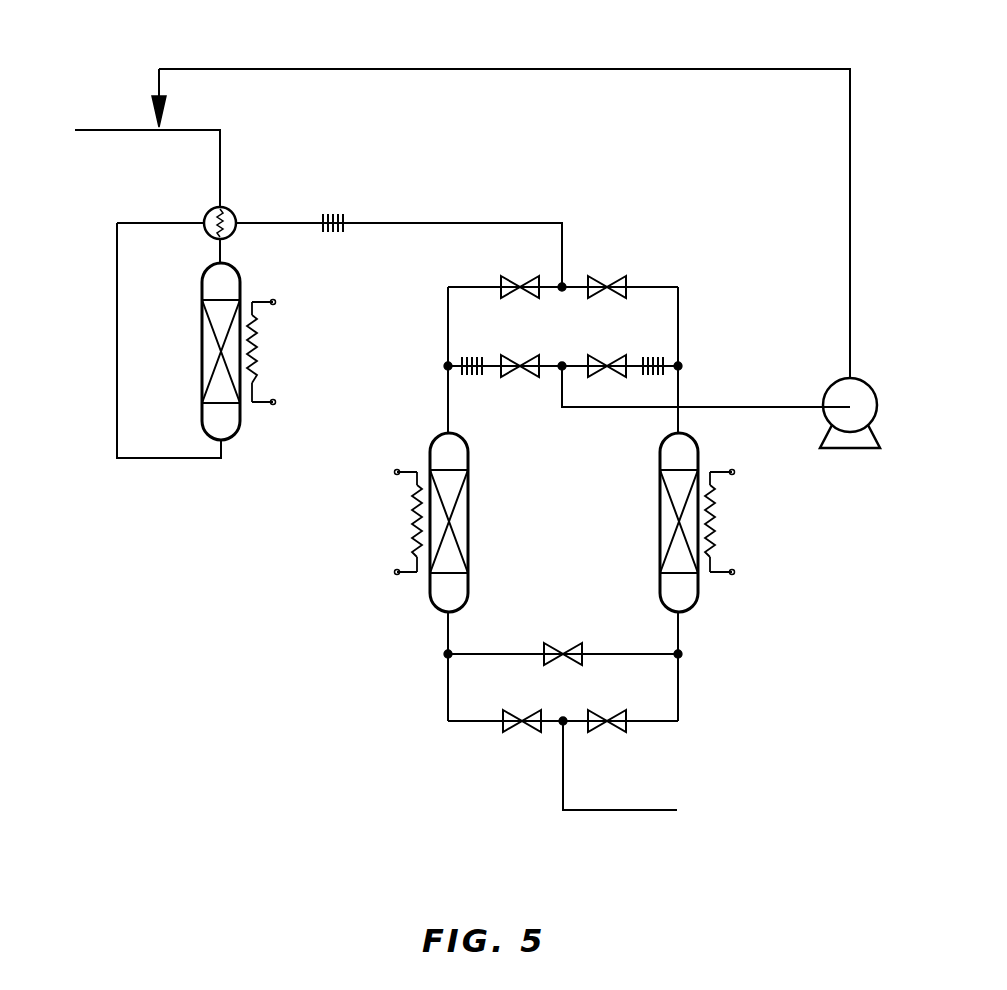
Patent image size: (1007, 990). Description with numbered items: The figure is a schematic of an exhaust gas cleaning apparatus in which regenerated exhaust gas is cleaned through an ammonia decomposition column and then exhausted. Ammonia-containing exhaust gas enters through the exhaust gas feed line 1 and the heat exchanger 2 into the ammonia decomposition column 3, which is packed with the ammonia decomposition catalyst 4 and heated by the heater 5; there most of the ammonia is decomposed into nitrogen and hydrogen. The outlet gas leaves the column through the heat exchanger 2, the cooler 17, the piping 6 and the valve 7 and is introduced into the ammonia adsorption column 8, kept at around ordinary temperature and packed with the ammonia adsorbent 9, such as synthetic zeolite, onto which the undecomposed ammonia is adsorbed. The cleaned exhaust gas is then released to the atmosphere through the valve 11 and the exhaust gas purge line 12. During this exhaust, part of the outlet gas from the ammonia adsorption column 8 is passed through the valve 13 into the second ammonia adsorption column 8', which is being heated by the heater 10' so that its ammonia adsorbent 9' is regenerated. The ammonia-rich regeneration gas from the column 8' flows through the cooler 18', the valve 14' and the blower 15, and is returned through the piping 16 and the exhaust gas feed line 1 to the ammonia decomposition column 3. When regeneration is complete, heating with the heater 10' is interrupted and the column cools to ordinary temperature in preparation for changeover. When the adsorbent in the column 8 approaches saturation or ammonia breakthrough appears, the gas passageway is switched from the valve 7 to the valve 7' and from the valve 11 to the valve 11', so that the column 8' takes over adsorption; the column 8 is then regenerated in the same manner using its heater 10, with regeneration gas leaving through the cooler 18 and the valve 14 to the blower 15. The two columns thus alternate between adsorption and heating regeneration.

The exhaust gas feed line 1 is at (95, 129).
The heat exchanger 2 is at (208, 210).
The ammonia decomposition column 3 is at (213, 280).
The ammonia decomposition catalyst 4 is at (208, 340).
The heater 5 is at (258, 334).
The piping 6 is at (133, 460).
The valve 7 is at (563, 264).
The valve 7' is at (607, 253).
The ammonia adsorption column 8 is at (424, 517).
The ammonia adsorption column 8' is at (704, 511).
The ammonia adsorbent 9 is at (478, 521).
The ammonia adsorbent 9' is at (650, 521).
The heater 10 is at (363, 522).
The heater 10' is at (767, 522).
The valve 11 is at (563, 745).
The valve 11' is at (645, 743).
The exhaust gas purge line 12 is at (612, 812).
The valve 13 is at (566, 646).
The valve 14 is at (539, 358).
The valve 14' is at (665, 324).
The blower 15 is at (866, 385).
The piping 16 is at (605, 69).
The cooler 17 is at (333, 213).
The cooler 18 is at (436, 353).
The cooler 18' is at (695, 344).